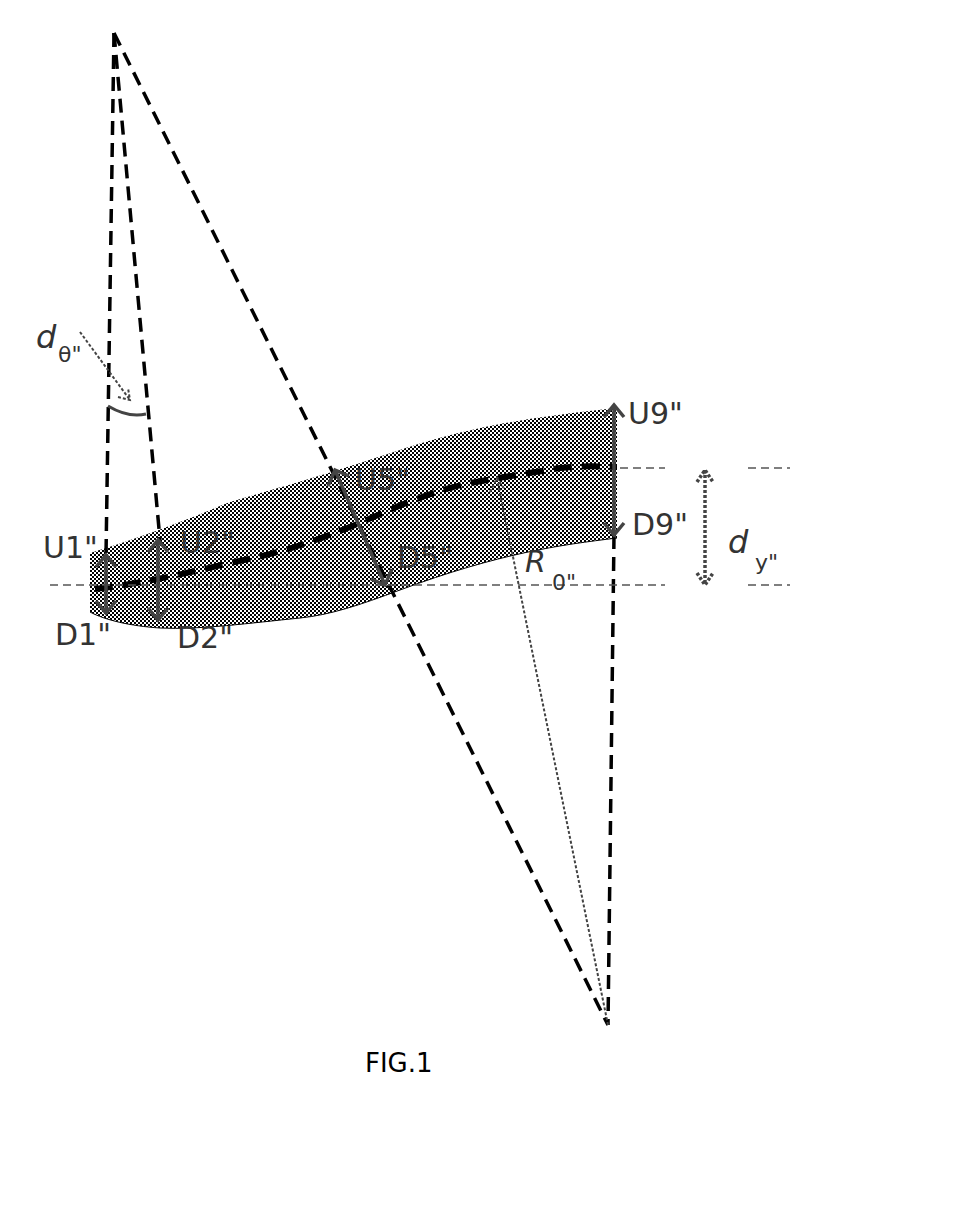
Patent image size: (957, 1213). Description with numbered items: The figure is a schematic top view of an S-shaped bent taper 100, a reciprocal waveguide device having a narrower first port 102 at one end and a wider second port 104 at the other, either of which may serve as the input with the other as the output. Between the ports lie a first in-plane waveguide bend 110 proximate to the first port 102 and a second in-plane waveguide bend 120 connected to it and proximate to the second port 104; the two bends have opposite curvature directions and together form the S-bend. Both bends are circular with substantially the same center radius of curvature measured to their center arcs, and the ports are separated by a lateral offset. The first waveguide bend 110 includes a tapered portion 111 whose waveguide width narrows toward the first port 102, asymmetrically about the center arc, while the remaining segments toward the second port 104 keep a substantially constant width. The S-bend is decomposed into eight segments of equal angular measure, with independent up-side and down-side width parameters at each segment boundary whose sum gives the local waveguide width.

The S-shaped bent taper 100 is at (338, 253).
The first port 102 is at (105, 588).
The second port 104 is at (618, 445).
The first in-plane waveguide bend 110 is at (230, 505).
The tapered portion 111 is at (157, 623).
The second in-plane waveguide bend 120 is at (455, 426).